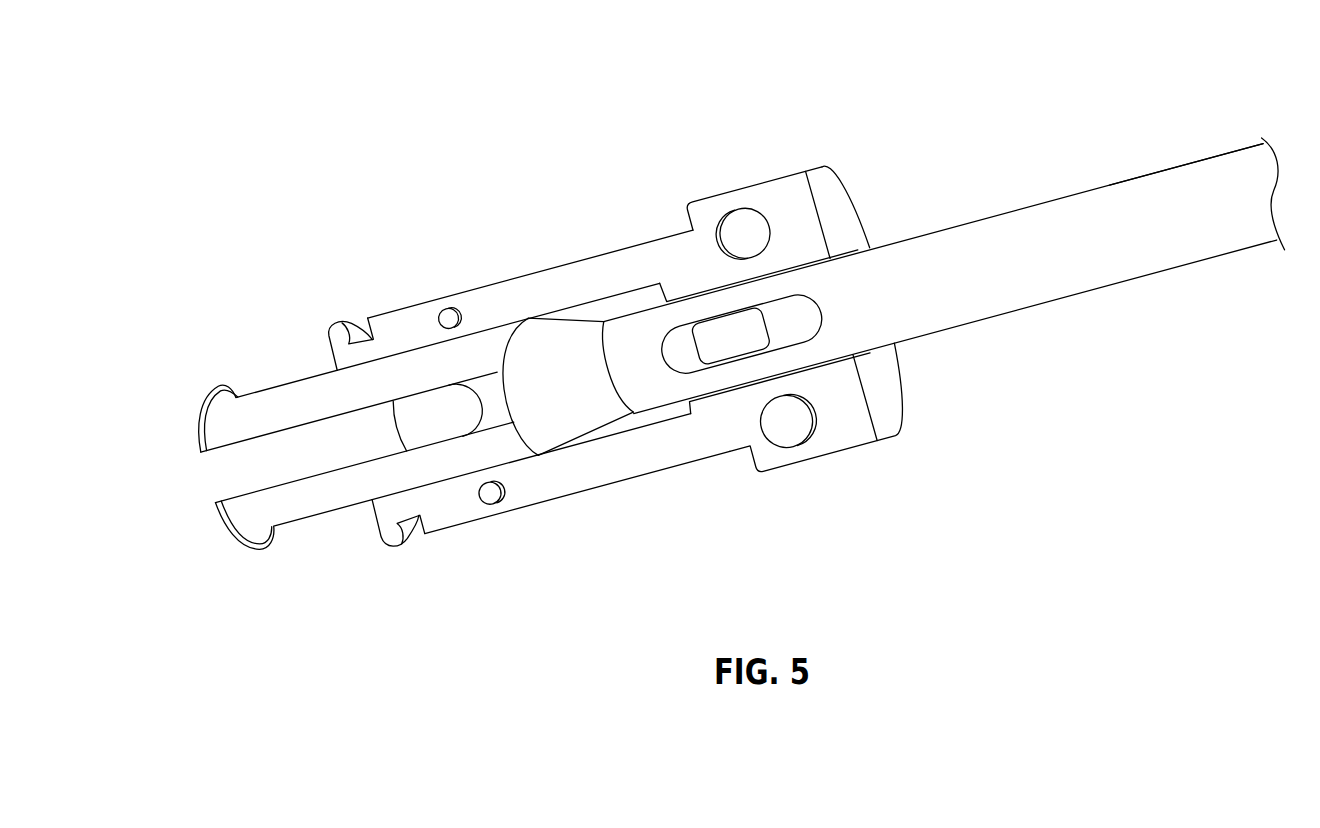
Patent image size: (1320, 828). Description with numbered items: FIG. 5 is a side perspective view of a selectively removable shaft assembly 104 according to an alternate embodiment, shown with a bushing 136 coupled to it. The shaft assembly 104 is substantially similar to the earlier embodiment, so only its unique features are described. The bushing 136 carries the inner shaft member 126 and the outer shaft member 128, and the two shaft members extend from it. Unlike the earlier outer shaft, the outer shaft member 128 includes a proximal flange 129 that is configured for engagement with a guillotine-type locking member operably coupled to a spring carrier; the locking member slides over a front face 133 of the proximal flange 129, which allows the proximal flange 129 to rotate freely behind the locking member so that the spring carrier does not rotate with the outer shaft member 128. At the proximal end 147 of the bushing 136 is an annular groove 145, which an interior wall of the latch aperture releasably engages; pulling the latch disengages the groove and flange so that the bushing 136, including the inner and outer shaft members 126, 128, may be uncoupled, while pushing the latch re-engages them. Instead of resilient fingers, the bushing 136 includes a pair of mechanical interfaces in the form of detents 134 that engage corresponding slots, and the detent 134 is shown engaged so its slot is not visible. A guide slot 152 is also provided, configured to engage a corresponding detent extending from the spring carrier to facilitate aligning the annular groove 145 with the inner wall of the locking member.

The shaft assembly 104 is at (1126, 132).
The inner shaft member 126 is at (794, 325).
The outer shaft member 128 is at (1080, 221).
The proximal flange 129 is at (213, 389).
The front face 133 is at (261, 540).
The detent 134 is at (732, 336).
The bushing 136 is at (849, 428).
The annular groove 145 is at (418, 552).
The proximal end 147 is at (389, 316).
The guide slot 152 is at (204, 479).